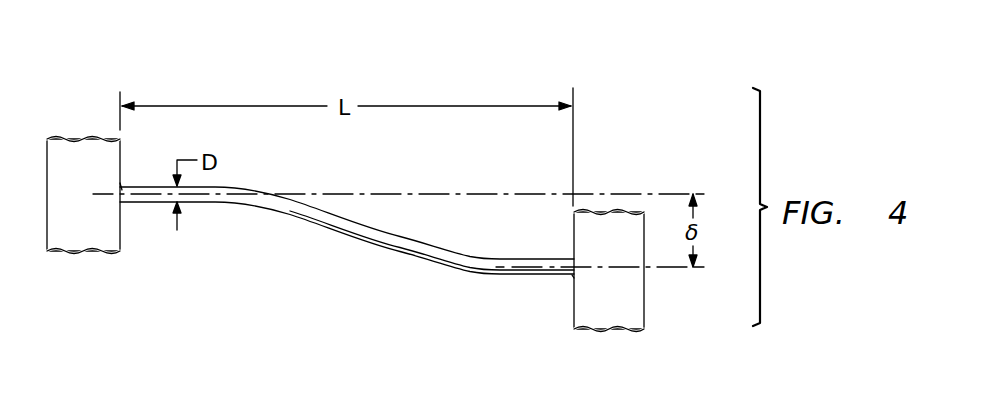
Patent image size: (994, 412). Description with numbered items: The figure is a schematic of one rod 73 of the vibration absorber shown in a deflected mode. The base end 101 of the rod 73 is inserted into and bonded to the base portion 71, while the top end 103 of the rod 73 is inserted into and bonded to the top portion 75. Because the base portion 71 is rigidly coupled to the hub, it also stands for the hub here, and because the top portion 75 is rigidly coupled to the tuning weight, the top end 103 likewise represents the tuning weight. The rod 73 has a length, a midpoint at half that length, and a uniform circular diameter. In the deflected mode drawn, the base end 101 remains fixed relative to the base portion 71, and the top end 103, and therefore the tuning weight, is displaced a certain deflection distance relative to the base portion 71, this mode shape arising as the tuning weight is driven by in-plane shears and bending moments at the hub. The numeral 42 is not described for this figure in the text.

The base portion 71 is at (77, 139).
The top portion 75 is at (646, 300).
The flexure beam 42 is at (360, 224).
The rod 73 is at (410, 256).
The base end 101 is at (121, 185).
The top end 103 is at (569, 281).